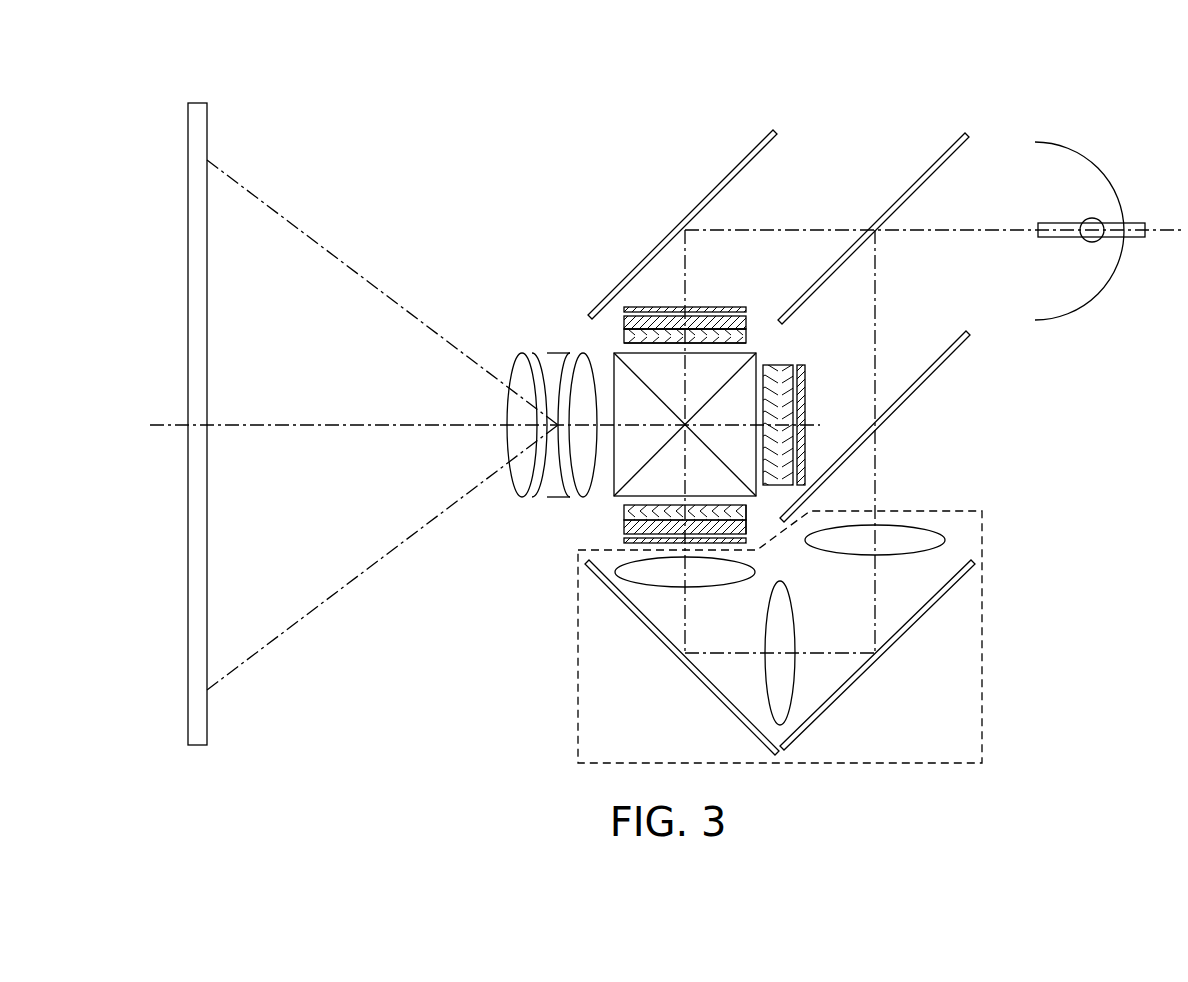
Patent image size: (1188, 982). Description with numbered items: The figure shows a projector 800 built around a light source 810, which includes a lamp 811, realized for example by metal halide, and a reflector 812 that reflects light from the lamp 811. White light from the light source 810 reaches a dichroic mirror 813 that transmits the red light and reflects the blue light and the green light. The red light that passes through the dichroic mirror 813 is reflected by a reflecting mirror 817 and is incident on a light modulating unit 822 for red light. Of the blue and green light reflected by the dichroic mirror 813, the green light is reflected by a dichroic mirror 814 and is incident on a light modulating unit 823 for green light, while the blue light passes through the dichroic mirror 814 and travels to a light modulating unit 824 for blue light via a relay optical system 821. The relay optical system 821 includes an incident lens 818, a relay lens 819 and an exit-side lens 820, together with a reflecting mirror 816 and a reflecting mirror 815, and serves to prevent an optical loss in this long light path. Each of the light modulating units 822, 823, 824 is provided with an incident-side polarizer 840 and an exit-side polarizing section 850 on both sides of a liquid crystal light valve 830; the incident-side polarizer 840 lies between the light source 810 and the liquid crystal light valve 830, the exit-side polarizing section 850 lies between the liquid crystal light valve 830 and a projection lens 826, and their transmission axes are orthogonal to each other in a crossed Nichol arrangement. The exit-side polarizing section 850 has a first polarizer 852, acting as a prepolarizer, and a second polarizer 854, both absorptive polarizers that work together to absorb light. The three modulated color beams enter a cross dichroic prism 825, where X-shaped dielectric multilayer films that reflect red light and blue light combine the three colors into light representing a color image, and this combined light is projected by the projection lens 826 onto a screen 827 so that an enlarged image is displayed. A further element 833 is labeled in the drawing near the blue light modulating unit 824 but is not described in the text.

The projector 800 is at (1034, 88).
The light source 810 is at (1100, 200).
The lamp 811 is at (1100, 220).
The reflector 812 is at (1104, 178).
The dichroic mirror 813 is at (928, 172).
The dichroic mirror 814 is at (916, 368).
The reflecting mirror 815 is at (855, 692).
The reflecting mirror 816 is at (706, 692).
The reflecting mirror 817 is at (727, 172).
The incident lens 818 is at (898, 550).
The relay lens 819 is at (791, 631).
The exit-side lens 820 is at (718, 578).
The relay optical system 821 is at (990, 653).
The light modulating unit 822 is at (614, 267).
The light modulating unit 823 is at (808, 362).
The light modulating unit 824 is at (612, 532).
The cross dichroic prism 825 is at (750, 352).
The projection lens 826 is at (507, 503).
The screen 827 is at (199, 103).
The liquid crystal light valve 830 is at (624, 320).
The polarizing plate 833 is at (748, 528).
The incident-side polarizer 840 is at (645, 307).
The exit-side polarizing section 850 is at (518, 345).
The first polarizer 852 is at (624, 325).
The second polarizer 854 is at (624, 340).